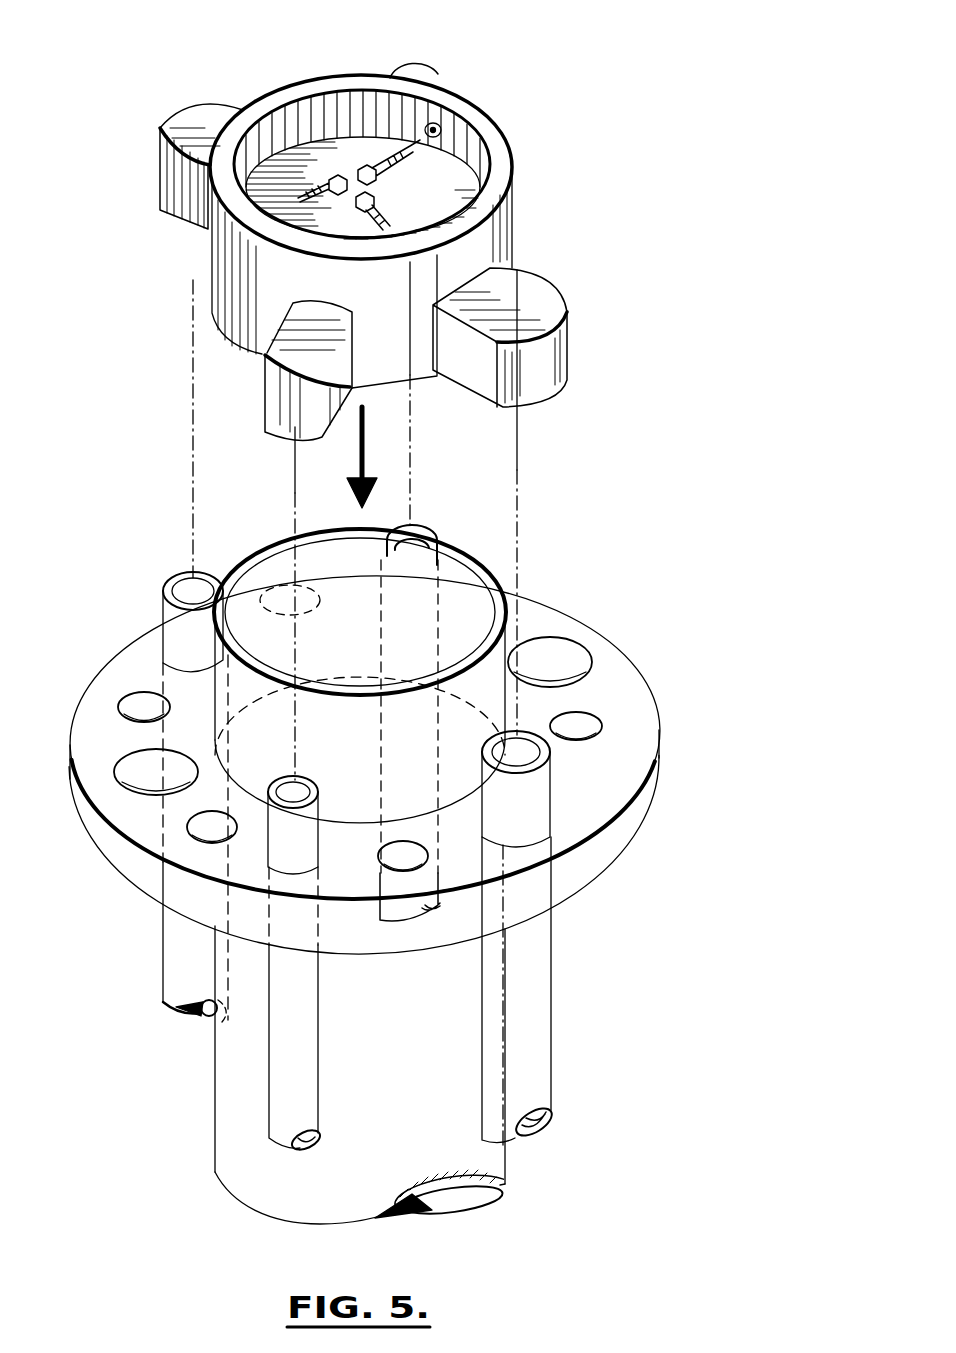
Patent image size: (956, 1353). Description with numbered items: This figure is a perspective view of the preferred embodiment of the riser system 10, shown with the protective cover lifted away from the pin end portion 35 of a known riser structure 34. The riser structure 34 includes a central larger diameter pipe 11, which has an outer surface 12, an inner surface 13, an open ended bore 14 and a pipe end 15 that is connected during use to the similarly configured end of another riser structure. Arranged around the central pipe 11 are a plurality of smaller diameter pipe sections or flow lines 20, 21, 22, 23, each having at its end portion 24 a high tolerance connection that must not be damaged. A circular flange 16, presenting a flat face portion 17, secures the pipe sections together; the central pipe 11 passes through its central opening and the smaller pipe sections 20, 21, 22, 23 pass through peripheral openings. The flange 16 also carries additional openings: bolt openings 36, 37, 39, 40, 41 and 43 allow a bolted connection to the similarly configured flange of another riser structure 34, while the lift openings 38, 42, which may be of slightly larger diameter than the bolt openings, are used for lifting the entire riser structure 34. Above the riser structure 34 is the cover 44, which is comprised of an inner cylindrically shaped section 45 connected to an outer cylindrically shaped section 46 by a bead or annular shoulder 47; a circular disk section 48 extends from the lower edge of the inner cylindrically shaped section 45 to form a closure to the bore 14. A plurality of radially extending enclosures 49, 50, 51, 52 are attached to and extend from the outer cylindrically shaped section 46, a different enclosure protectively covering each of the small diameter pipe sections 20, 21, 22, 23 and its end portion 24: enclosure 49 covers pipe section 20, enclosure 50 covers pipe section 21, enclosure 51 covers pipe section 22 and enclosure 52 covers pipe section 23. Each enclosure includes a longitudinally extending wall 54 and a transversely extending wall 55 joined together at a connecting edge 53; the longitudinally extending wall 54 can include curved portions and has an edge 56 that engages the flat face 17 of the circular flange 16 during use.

The riser system 10 is at (110, 55).
The central larger diameter pipe 11 is at (285, 1208).
The outer surface 12 is at (360, 934).
The inner surface 13 is at (243, 608).
The open ended bore 14 is at (340, 585).
The pipe end 15 is at (460, 565).
The circular flange 16 is at (632, 680).
The flat face portion 17 is at (560, 630).
The smaller diameter pipe section 20 is at (180, 642).
The smaller diameter pipe section 21 is at (428, 601).
The smaller diameter pipe section 22 is at (548, 795).
The smaller diameter pipe section 23 is at (305, 1048).
The end portion 24 is at (178, 578).
The riser structure 34 is at (632, 822).
The end portion 35 is at (583, 528).
The bolt opening 36 is at (315, 620).
The bolt opening 37 is at (508, 623).
The lift opening 38 is at (580, 655).
The bolt opening 39 is at (598, 727).
The bolt opening 40 is at (410, 852).
The bolt opening 41 is at (190, 830).
The lift opening 42 is at (125, 775).
The bolt opening 43 is at (132, 712).
The cover 44 is at (512, 162).
The inner cylindrically shaped section 45 is at (318, 112).
The outer cylindrically shaped section 46 is at (262, 338).
The bead or annular shoulder 47 is at (492, 138).
The circular disk section 48 is at (357, 157).
The radially extending enclosure 49 is at (158, 195).
The radially extending enclosure 50 is at (448, 78).
The radially extending enclosure 51 is at (557, 310).
The radially extending enclosure 52 is at (285, 430).
The connecting edge 53 is at (180, 108).
The longitudinally extending wall 54 is at (155, 158).
The transversely extending wall 55 is at (205, 120).
The edge 56 is at (180, 220).